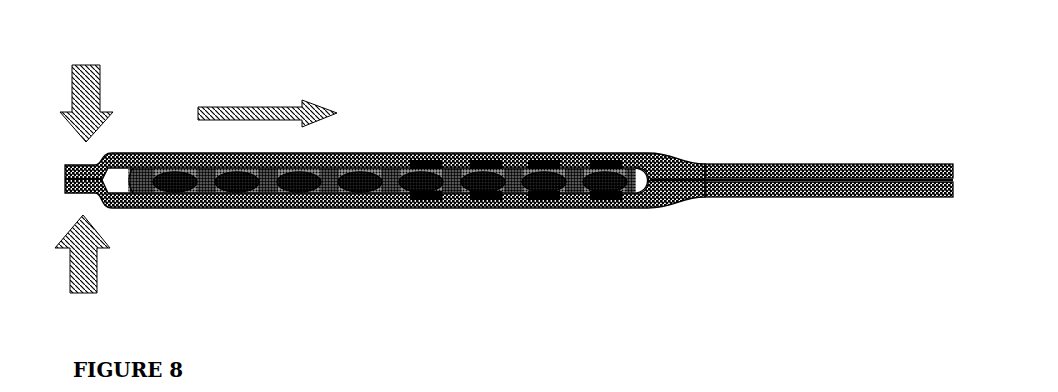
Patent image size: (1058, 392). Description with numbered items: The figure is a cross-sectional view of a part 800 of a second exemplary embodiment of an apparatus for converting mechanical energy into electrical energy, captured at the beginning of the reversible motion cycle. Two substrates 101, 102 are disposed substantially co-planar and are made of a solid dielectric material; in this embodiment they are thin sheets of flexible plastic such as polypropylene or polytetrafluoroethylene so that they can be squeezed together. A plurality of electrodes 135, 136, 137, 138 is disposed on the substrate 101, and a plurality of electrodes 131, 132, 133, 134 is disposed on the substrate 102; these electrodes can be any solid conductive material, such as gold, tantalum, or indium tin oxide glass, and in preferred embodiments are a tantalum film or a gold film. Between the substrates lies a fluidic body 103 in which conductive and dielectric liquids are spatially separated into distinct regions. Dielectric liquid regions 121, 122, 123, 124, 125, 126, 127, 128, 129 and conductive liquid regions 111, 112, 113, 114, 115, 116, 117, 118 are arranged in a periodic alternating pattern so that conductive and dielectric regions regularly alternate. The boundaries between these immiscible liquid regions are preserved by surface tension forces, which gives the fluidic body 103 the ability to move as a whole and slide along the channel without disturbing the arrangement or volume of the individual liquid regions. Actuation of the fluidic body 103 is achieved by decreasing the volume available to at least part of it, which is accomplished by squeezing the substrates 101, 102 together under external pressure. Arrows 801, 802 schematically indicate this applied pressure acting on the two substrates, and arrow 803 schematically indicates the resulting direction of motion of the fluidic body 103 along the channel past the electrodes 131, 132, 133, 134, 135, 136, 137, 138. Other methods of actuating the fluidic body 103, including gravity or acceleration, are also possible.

The part of the second exemplary embodiment 800 is at (898, 85).
The substrate 101 is at (800, 158).
The substrate 102 is at (807, 207).
The fluidic body 103 is at (655, 171).
The conductive liquid region 111 is at (177, 184).
The conductive liquid region 112 is at (238, 184).
The conductive liquid region 113 is at (300, 184).
The conductive liquid region 114 is at (362, 184).
The conductive liquid region 115 is at (423, 184).
The conductive liquid region 116 is at (485, 184).
The conductive liquid region 117 is at (546, 184).
The conductive liquid region 118 is at (607, 184).
The dielectric liquid region 121 is at (136, 181).
The dielectric liquid region 122 is at (206, 181).
The dielectric liquid region 123 is at (268, 182).
The dielectric liquid region 124 is at (330, 181).
The dielectric liquid region 125 is at (392, 182).
The dielectric liquid region 126 is at (455, 182).
The dielectric liquid region 127 is at (516, 182).
The dielectric liquid region 128 is at (578, 184).
The dielectric liquid region 129 is at (638, 183).
The electrode 131 is at (431, 191).
The electrode 132 is at (489, 191).
The electrode 133 is at (560, 191).
The electrode 134 is at (622, 191).
The electrode 135 is at (418, 158).
The electrode 136 is at (494, 160).
The electrode 137 is at (552, 160).
The electrode 138 is at (621, 160).
The arrow 801 is at (100, 100).
The arrow 802 is at (100, 275).
The arrow 803 is at (238, 97).